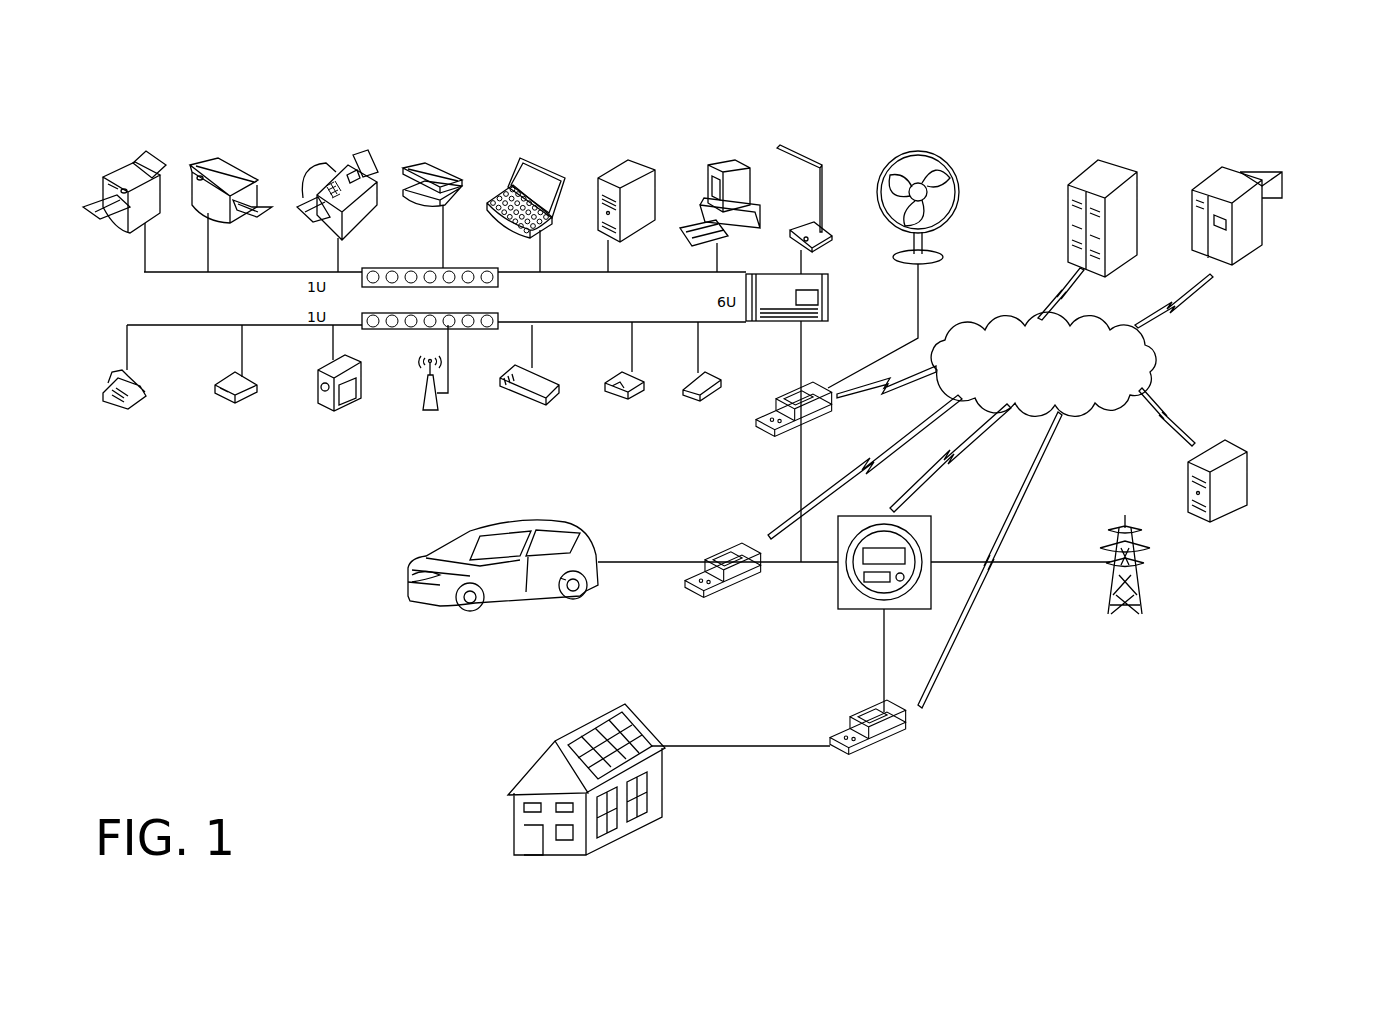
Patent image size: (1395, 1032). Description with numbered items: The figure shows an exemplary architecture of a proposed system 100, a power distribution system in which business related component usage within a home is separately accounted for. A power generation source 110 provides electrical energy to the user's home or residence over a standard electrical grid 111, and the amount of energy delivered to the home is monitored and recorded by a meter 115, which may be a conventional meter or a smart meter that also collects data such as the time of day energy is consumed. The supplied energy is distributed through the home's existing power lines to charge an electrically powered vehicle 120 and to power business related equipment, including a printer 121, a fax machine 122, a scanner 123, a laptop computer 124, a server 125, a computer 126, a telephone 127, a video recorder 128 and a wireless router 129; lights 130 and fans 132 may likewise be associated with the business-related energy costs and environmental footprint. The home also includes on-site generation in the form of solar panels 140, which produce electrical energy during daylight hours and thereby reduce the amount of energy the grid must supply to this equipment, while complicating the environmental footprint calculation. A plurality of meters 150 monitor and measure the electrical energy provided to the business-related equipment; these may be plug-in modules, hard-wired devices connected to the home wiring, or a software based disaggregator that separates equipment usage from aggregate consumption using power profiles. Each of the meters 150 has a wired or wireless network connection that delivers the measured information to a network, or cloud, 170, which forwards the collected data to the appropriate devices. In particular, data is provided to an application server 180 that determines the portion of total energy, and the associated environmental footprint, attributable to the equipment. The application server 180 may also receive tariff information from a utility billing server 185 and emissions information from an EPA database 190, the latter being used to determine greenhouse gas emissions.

The system 100 is at (1135, 750).
The power generation source 110 is at (1138, 580).
The grid 111 is at (1050, 564).
The meter 115 is at (837, 590).
The electrically powered vehicle 120 is at (410, 577).
The printer 121 is at (126, 162).
The fax machine 122 is at (226, 162).
The scanner 123 is at (430, 162).
The laptop computer 124 is at (545, 160).
The server 125 is at (646, 160).
The computer 126 is at (730, 160).
The telephone 127 is at (113, 408).
The video recorder 128 is at (333, 411).
The wireless router 129 is at (430, 412).
The lights 130 is at (813, 160).
The fans 132 is at (946, 160).
The solar panels 140 is at (580, 744).
The meters 150 is at (758, 434).
The network (cloud) 170 is at (998, 320).
The application server 180 is at (1112, 160).
The utility billing server 185 is at (1220, 165).
The EPA database 190 is at (1247, 478).